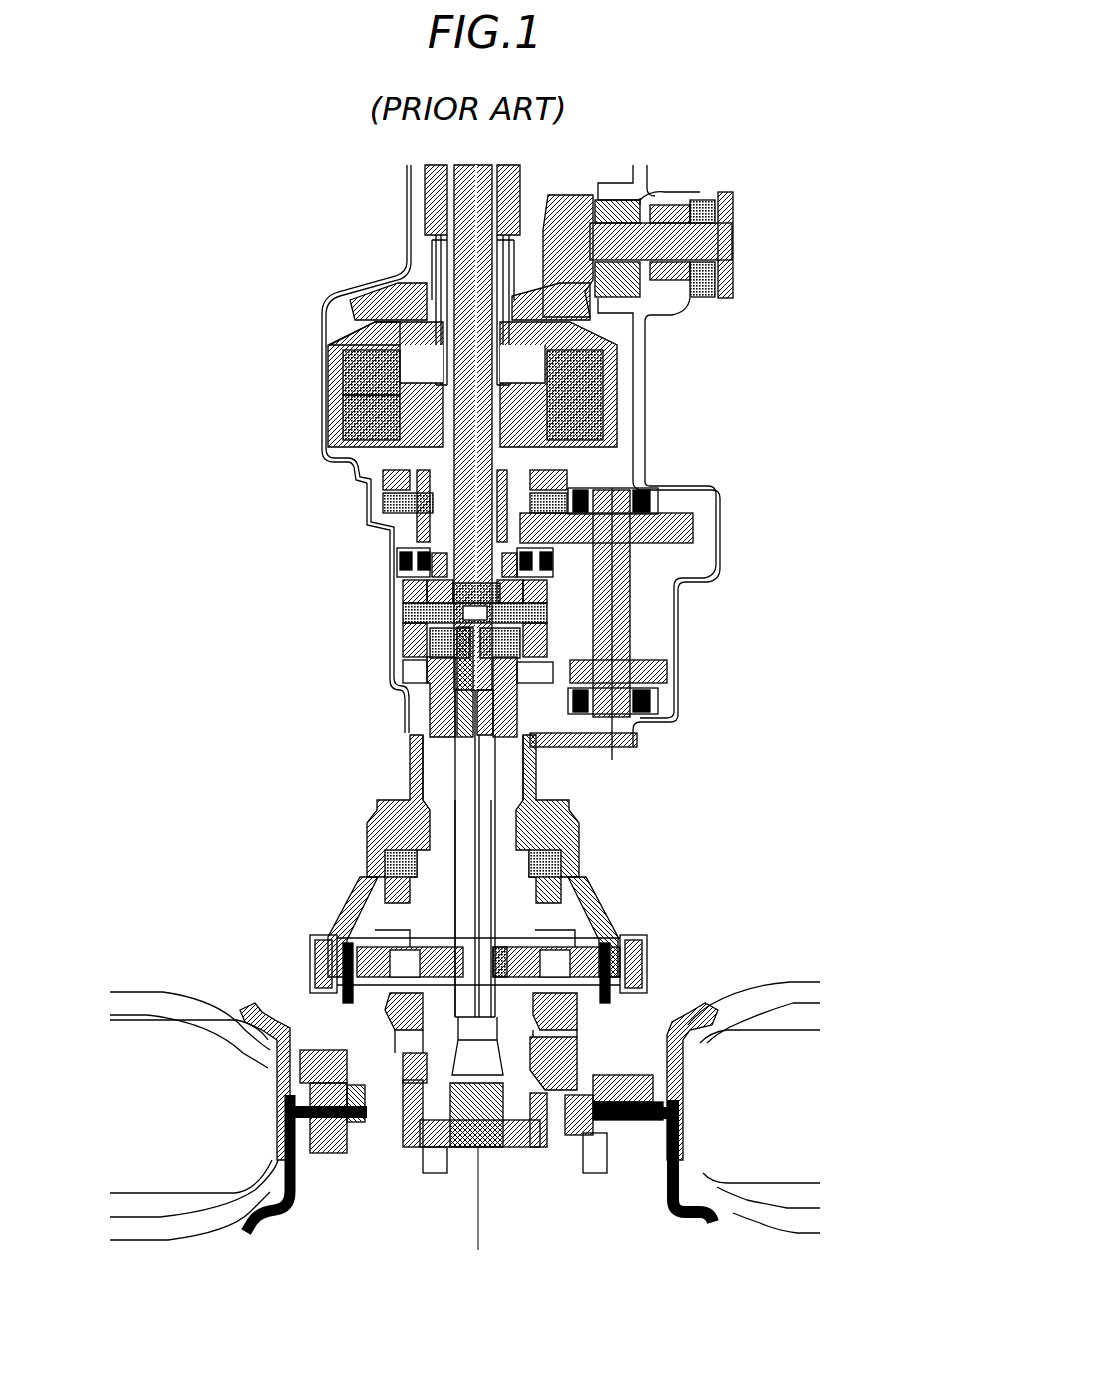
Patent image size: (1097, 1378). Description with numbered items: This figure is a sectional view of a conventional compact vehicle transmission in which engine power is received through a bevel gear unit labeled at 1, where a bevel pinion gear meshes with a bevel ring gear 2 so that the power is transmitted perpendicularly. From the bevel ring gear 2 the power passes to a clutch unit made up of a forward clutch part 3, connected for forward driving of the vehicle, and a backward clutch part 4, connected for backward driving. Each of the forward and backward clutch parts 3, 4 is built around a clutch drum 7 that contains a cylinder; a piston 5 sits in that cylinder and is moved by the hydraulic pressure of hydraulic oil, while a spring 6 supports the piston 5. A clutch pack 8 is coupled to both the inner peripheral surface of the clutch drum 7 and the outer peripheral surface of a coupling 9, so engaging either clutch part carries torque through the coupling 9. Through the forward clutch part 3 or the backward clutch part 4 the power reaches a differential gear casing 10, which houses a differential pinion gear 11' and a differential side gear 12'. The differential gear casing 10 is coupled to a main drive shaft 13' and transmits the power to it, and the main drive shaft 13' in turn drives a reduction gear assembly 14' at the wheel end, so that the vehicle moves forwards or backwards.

The input flange assembly 1 is at (690, 300).
The bevel ring gear 2 is at (355, 292).
The forward clutch part 3 is at (332, 373).
The backward clutch part 4 is at (332, 412).
The piston 5 is at (328, 350).
The spring 6 is at (348, 338).
The clutch drum 7 is at (335, 447).
The clutch pack 8 is at (330, 472).
The coupling 9 is at (392, 522).
The differential gear casing 10 is at (405, 597).
The pinion 11' is at (415, 660).
The hub 12' is at (421, 683).
The axle body 13' is at (448, 876).
The wheel hub assembly 14' is at (408, 965).